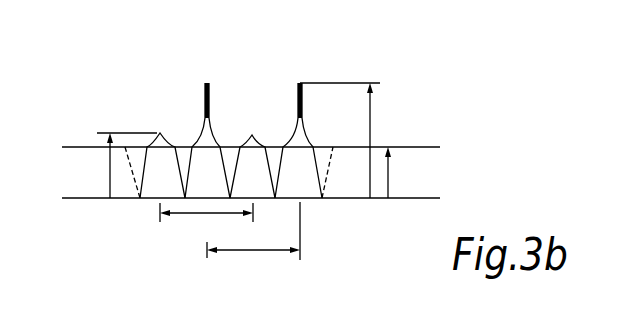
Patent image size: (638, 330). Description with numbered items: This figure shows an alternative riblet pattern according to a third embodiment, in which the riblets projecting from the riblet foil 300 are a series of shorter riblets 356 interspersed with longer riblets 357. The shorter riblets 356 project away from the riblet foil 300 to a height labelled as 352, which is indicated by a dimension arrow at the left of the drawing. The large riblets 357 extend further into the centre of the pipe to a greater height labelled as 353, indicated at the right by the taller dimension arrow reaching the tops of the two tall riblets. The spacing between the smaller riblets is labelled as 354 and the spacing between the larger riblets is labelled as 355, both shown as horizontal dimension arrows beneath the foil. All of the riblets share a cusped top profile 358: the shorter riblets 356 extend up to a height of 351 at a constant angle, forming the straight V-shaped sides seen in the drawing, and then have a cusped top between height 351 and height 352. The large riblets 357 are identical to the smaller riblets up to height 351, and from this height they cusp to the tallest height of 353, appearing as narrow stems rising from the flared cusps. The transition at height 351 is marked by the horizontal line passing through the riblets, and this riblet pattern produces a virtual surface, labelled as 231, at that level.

The riblet foil 300 is at (105, 100).
The virtual surface 231 is at (430, 145).
The height of constant-angle portion 351 is at (388, 176).
The height of shorter riblets 352 is at (110, 167).
The height of large riblets 353 is at (370, 117).
The spacing between smaller riblets 354 is at (187, 214).
The spacing between larger riblets 355 is at (253, 255).
The shorter riblets 356 is at (163, 188).
The longer riblets 357 is at (305, 198).
The cusped top profile 358 is at (160, 133).